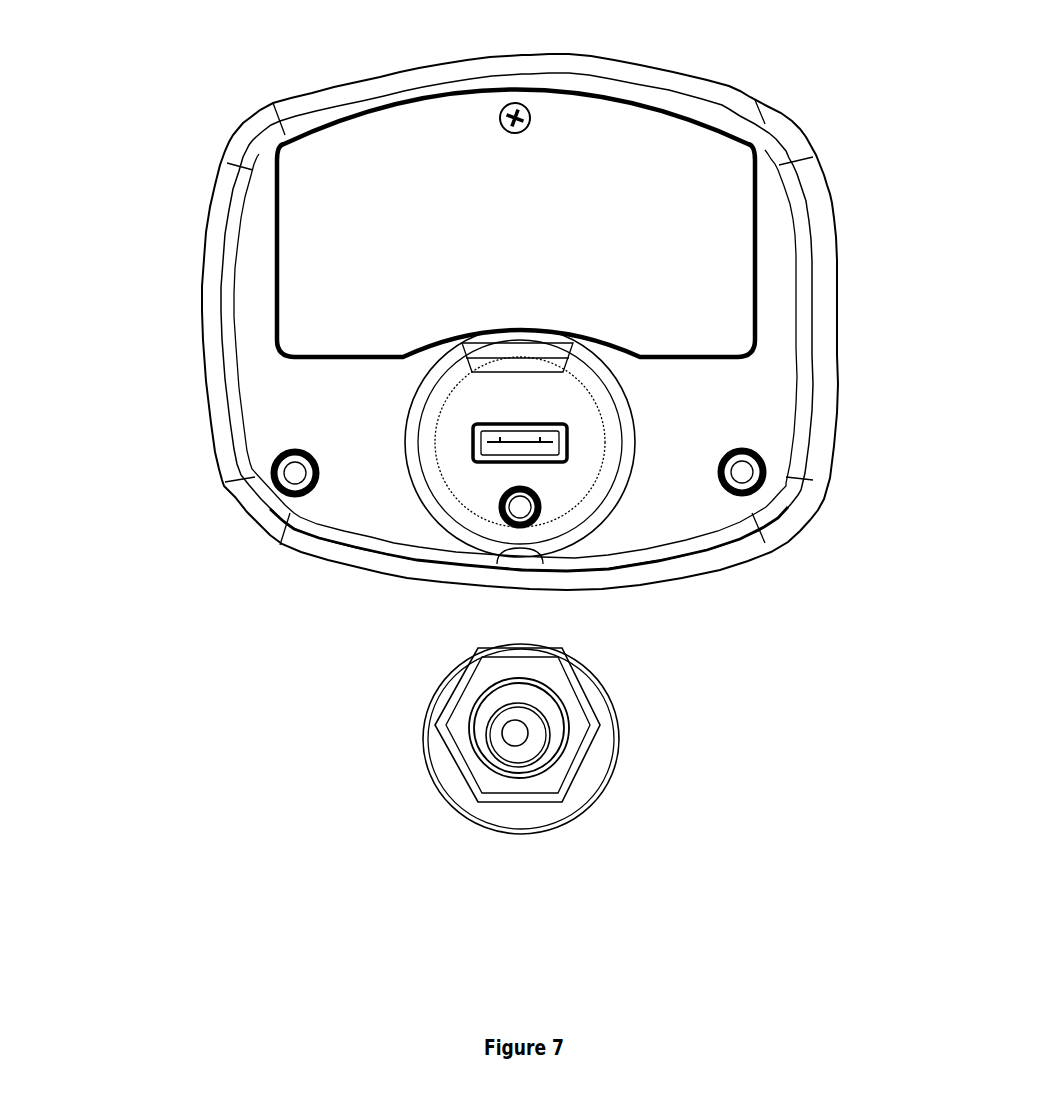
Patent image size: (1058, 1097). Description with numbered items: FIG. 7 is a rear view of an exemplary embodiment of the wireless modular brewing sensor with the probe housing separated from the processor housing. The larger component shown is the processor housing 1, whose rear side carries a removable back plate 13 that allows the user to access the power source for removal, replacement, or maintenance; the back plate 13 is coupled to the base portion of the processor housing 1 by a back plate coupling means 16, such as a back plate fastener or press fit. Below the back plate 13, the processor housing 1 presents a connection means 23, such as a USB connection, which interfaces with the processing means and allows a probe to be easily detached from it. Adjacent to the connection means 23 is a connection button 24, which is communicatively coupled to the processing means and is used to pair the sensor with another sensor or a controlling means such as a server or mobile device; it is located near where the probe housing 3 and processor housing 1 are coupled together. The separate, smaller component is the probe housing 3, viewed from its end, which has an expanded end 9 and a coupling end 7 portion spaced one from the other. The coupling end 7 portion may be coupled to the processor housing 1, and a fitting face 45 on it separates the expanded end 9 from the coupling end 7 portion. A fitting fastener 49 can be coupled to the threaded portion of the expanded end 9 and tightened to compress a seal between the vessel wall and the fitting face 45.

The processor housing 1 is at (193, 47).
The probe housing 3 is at (488, 774).
The coupling end portion 7 is at (600, 770).
The expanded end 9 is at (518, 805).
The back plate 13 is at (740, 304).
The back plate coupling means 16 is at (535, 102).
The connection means 23 is at (540, 463).
The connection button 24 is at (543, 517).
The fitting face 45 is at (590, 687).
The fitting fastener 49 is at (600, 725).